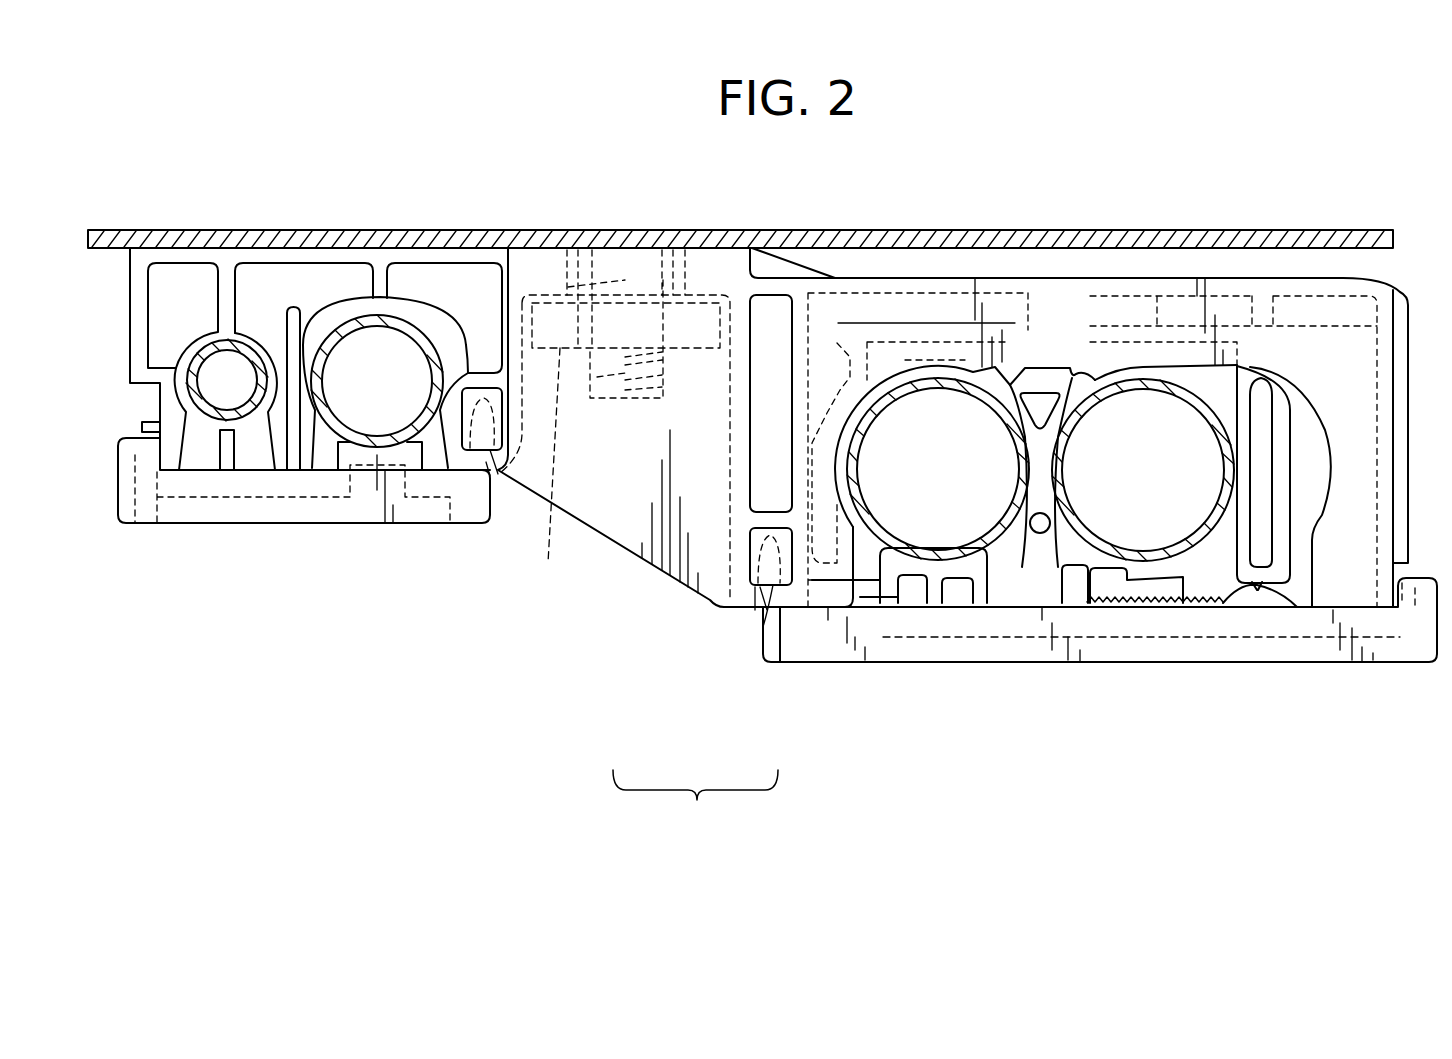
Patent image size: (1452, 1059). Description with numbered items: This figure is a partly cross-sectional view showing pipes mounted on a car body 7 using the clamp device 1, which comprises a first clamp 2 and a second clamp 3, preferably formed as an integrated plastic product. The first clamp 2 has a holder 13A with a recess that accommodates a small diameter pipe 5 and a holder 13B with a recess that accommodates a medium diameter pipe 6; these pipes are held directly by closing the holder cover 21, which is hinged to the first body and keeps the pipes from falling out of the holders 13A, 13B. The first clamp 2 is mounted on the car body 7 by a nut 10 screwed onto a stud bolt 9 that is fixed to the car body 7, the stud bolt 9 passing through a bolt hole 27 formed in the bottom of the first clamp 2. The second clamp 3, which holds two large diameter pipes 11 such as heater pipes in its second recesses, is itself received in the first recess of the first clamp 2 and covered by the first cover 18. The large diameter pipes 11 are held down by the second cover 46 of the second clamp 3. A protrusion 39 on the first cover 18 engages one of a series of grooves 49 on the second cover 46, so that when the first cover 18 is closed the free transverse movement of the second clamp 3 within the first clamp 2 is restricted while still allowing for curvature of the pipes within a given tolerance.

The clamp device 1 is at (682, 849).
The first clamp 2 is at (623, 592).
The second clamp 3 is at (903, 606).
The pipe 5 is at (230, 350).
The pipe 6 is at (367, 320).
The car body 7 is at (478, 236).
The stud bolt 9 is at (597, 285).
The nut 10 is at (615, 453).
The large diameter pipes 11 is at (1098, 392).
The holder 13A is at (200, 347).
The holder 13B is at (337, 317).
The first cover 18 is at (1173, 645).
The holder cover 21 is at (277, 503).
The bolt hole 27 is at (590, 240).
The protrusion 39 is at (1243, 590).
The second cover 46 is at (1017, 588).
The grooves 49 is at (1198, 610).